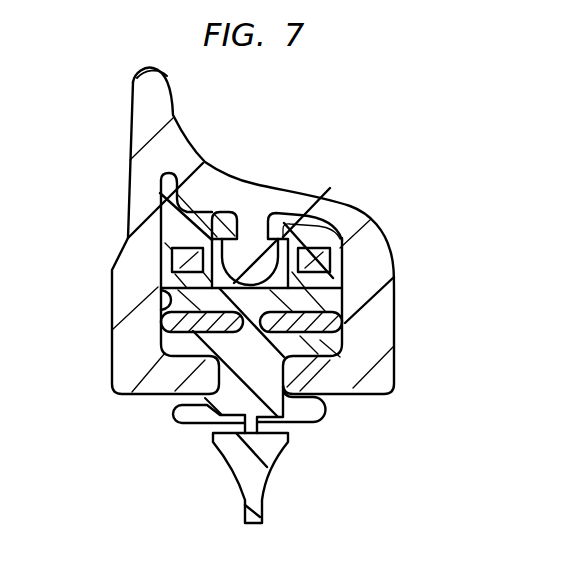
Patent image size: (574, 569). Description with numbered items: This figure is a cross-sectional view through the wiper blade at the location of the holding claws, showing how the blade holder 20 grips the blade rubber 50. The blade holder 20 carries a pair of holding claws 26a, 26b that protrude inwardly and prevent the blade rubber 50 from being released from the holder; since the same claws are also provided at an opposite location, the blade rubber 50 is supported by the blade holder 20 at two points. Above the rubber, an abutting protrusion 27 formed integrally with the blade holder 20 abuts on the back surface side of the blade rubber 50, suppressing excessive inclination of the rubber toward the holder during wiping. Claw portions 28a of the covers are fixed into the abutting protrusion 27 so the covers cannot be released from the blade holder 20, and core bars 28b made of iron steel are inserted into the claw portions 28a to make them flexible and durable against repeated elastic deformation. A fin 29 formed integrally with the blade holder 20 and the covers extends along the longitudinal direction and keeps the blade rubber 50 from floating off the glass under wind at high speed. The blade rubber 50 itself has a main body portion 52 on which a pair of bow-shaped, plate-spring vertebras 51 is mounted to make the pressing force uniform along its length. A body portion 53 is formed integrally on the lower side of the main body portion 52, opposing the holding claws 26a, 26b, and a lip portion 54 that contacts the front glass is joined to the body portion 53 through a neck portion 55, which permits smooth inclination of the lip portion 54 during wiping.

The blade holder 20 is at (143, 211).
The fin 29 is at (150, 90).
The abutting protrusion 27 is at (255, 255).
The claw portion 28a is at (180, 222).
The core bar 28b is at (178, 253).
The main body portion 52 is at (307, 303).
The vertebra 51 is at (200, 320).
The holding claw 26a is at (242, 377).
The holding claw 26b is at (302, 377).
The body portion 53 is at (205, 396).
The neck portion 55 is at (262, 426).
The blade rubber 50 is at (210, 453).
The lip portion 54 is at (258, 500).